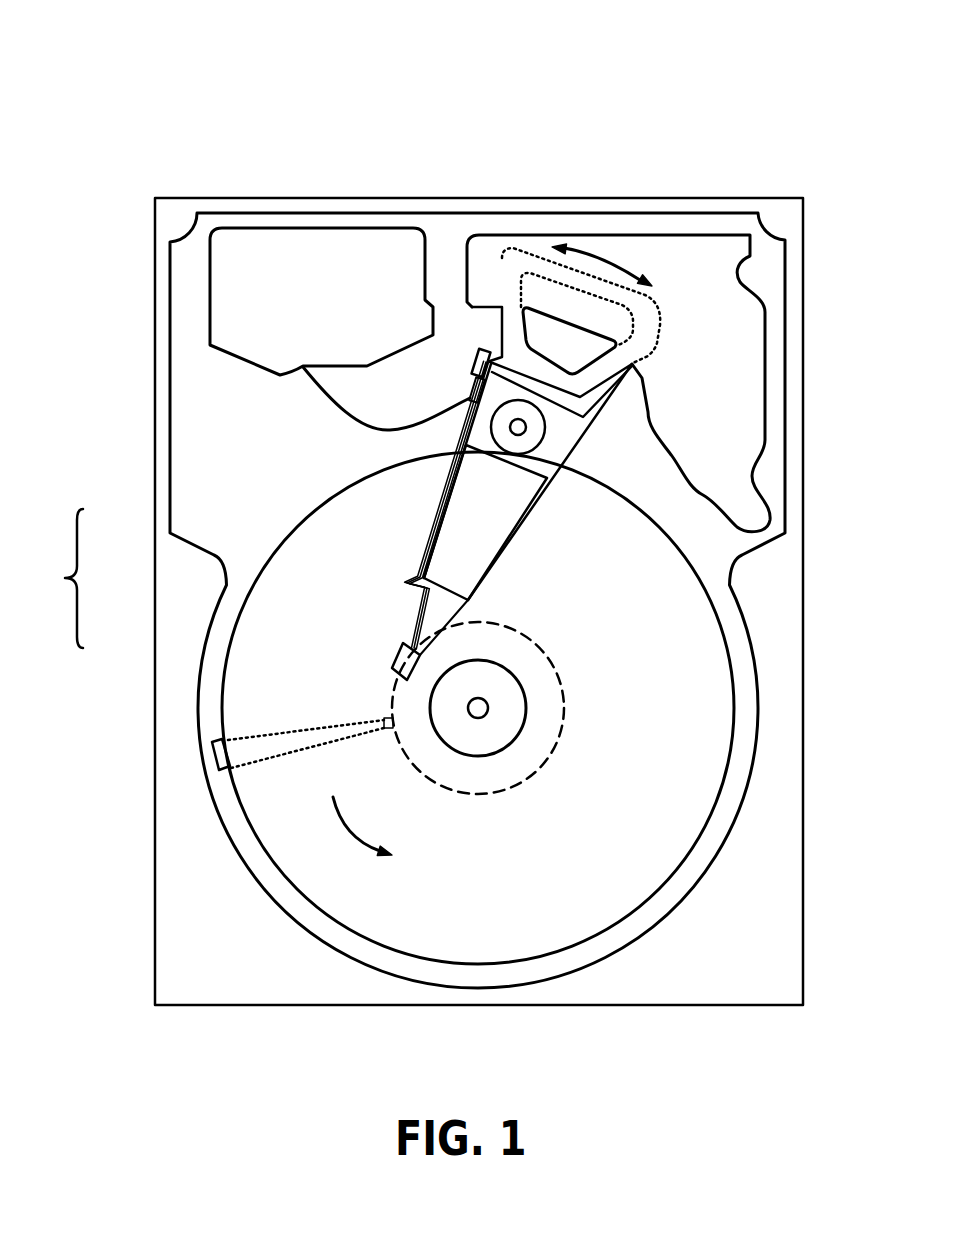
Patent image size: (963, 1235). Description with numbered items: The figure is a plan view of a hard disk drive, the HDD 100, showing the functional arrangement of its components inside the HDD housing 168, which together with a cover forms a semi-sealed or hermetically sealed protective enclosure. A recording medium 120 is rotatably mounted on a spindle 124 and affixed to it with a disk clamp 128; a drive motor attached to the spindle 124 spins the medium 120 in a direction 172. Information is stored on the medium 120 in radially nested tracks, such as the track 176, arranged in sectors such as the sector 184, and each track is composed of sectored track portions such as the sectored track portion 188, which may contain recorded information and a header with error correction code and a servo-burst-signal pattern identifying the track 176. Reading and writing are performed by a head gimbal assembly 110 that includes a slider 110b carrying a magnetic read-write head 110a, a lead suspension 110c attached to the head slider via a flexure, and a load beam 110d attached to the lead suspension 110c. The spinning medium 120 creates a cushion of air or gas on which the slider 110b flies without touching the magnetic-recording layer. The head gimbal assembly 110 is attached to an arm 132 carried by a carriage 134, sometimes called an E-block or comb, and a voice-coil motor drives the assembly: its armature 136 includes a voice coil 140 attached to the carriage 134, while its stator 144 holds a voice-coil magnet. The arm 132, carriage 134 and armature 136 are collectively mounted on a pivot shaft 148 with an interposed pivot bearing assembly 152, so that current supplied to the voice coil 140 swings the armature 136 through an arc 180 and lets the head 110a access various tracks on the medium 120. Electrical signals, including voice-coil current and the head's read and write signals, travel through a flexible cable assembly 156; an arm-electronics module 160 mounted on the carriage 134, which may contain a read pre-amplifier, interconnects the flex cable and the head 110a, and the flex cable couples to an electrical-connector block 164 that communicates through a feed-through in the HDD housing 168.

The hard disk drive 100 is at (80, 72).
The head gimbal assembly 110 is at (51, 578).
The magnetic read-write head 110a is at (397, 662).
The slider 110b is at (417, 630).
The lead suspension 110c is at (423, 597).
The load beam 110d is at (405, 583).
The recording medium 120 is at (665, 660).
The spindle 124 is at (480, 707).
The disk clamp 128 is at (505, 725).
The arm 132 is at (472, 542).
The carriage 134 is at (538, 458).
The armature 136 is at (492, 330).
The voice coil 140 is at (514, 320).
The stator 144 is at (733, 325).
The pivot shaft 148 is at (527, 426).
The pivot bearing assembly 152 is at (530, 438).
The flexible cable assembly 156 is at (337, 402).
The arm-electronics module 160 is at (466, 393).
The electrical-connector block 164 is at (235, 298).
The HDD housing 168 is at (782, 212).
The direction 172 is at (362, 836).
The track 176 is at (553, 668).
The arc 180 is at (598, 252).
The sector 184 is at (213, 753).
The sectored track portion 188 is at (384, 720).